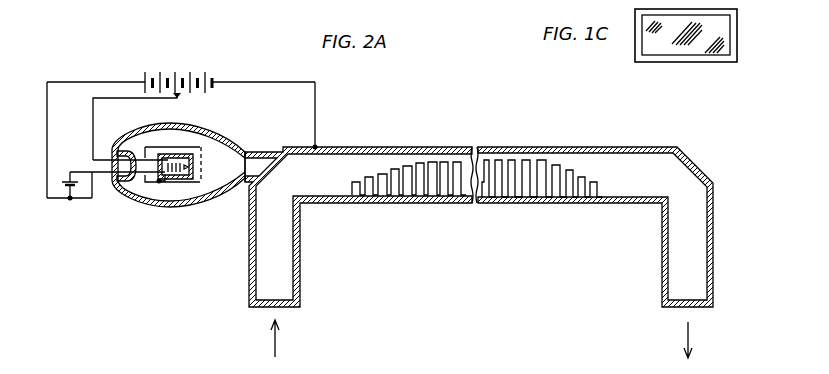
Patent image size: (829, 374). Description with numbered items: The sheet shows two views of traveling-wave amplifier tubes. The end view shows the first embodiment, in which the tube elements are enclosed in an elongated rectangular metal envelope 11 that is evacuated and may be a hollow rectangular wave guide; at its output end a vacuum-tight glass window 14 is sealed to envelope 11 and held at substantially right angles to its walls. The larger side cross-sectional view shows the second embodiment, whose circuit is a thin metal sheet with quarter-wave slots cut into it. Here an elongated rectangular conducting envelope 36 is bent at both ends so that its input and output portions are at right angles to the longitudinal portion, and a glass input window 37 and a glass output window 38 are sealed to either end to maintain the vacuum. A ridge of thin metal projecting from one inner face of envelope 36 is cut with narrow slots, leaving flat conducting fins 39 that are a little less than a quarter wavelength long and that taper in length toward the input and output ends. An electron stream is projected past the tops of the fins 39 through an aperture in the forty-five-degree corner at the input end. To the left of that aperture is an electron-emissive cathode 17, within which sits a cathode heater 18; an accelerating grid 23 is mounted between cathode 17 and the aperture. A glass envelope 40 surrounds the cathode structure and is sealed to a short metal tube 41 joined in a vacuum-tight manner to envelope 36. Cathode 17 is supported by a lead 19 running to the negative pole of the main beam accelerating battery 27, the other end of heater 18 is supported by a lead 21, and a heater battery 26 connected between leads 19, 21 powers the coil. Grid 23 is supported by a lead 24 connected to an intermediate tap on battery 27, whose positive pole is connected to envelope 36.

In FIG. 1C, the envelope 11 is at (667, 62).
In FIG. 1C, the glass window 14 is at (722, 25).
In FIG. 2A, the cathode 17 is at (185, 180).
In FIG. 2A, the cathode heater 18 is at (172, 183).
In FIG. 2A, the lead 19 is at (152, 184).
In FIG. 2A, the lead 21 is at (150, 145).
In FIG. 2A, the accelerating grid 23 is at (203, 173).
In FIG. 2A, the lead 24 is at (177, 147).
In FIG. 2A, the heater battery 26 is at (77, 193).
In FIG. 2A, the main beam accelerating battery 27 is at (183, 68).
In FIG. 2A, the envelope 36 is at (533, 148).
In FIG. 2A, the glass input window 37 is at (285, 307).
In FIG. 2A, the glass output window 38 is at (697, 308).
In FIG. 2A, the fins 39 is at (445, 162).
In FIG. 2A, the glass envelope 40 is at (222, 133).
In FIG. 2A, the metal tube 41 is at (262, 150).